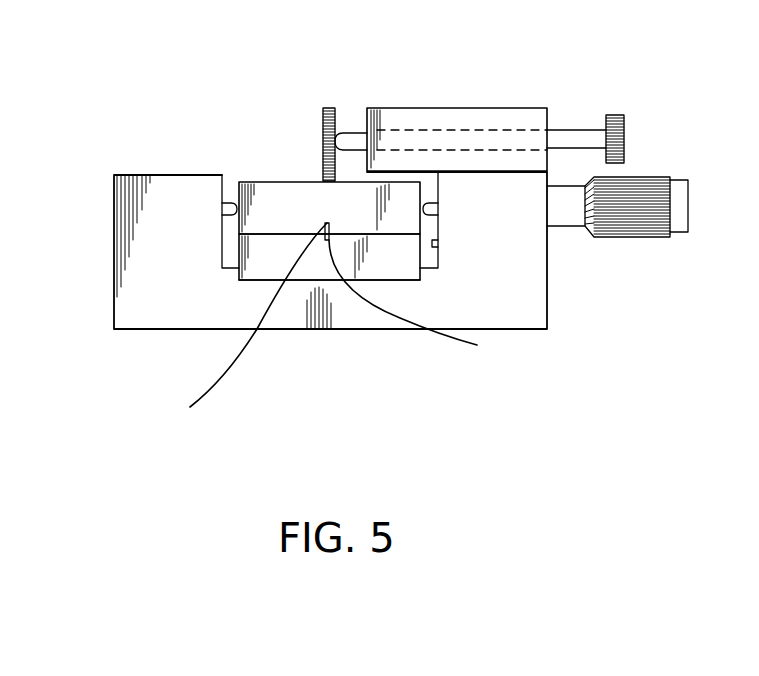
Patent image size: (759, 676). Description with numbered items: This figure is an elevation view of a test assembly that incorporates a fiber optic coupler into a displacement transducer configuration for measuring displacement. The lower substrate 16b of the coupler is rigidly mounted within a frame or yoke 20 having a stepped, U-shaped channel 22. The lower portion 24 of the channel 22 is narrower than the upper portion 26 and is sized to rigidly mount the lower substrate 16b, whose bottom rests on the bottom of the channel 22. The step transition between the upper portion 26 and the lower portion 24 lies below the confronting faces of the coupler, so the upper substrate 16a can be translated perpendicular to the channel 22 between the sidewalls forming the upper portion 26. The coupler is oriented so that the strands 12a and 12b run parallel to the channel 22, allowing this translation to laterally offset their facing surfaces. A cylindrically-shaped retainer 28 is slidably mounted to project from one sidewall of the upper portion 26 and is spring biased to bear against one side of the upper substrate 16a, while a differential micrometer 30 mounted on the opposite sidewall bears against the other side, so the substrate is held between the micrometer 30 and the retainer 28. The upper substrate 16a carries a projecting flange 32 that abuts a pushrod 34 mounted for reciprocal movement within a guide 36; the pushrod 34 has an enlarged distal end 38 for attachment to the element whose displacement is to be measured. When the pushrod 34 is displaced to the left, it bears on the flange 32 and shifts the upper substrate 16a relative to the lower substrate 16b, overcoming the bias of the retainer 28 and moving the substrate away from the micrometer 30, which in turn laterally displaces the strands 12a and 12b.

The strand 12a is at (222, 380).
The strand 12b is at (470, 350).
The upper substrate 16a is at (412, 195).
The lower substrate 16b is at (382, 265).
The frame or yoke 20 is at (512, 308).
The stepped, U-shaped channel 22 is at (433, 243).
The lower portion 24 is at (417, 282).
The upper portion 26 is at (428, 210).
The retainer 28 is at (228, 215).
The differential micrometer 30 is at (637, 237).
The projecting flange 32 is at (323, 140).
The pushrod 34 is at (348, 135).
The guide 36 is at (417, 115).
The enlarged distal end 38 is at (624, 128).